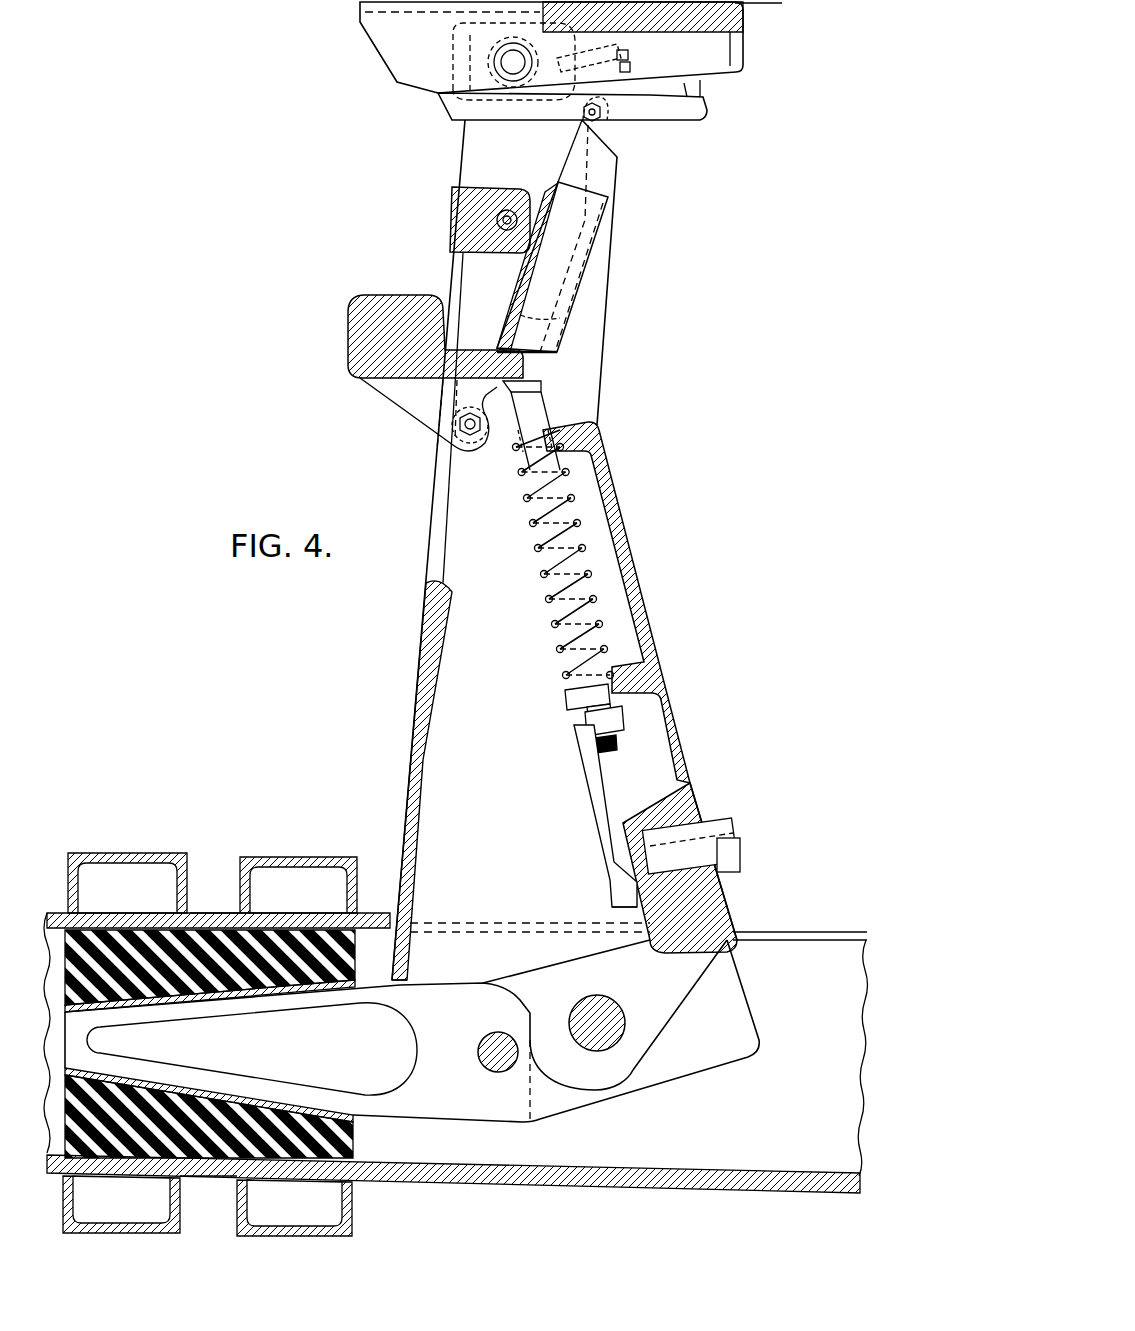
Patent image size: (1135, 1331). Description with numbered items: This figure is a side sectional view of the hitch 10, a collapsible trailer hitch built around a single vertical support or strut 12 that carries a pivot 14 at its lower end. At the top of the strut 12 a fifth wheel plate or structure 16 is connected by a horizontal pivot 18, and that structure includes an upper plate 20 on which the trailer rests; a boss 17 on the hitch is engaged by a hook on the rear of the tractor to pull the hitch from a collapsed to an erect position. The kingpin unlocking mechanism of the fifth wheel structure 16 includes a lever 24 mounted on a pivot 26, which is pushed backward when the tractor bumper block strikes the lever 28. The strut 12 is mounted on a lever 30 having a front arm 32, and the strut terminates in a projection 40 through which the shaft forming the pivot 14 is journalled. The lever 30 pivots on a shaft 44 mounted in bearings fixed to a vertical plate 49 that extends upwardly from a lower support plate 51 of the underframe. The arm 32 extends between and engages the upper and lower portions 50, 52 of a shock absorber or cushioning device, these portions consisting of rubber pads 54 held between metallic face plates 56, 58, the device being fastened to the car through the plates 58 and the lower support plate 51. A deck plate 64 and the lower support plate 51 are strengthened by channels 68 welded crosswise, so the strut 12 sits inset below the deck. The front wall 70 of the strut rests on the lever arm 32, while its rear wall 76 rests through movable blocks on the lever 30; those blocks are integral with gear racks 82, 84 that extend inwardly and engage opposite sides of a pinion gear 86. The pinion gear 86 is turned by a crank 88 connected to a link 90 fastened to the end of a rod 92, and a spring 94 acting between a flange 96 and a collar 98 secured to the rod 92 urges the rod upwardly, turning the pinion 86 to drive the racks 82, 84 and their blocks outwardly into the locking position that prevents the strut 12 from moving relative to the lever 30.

The hitch 10 is at (638, 358).
The vertical support or strut 12 is at (587, 336).
The pivot 14 is at (616, 1012).
The fifth wheel plate or structure 16 is at (354, 63).
The boss 17 is at (450, 594).
The horizontal pivot 18 is at (501, 63).
The upper plate 20 is at (362, 14).
The lever 24 is at (588, 305).
The pivot 26 is at (507, 216).
The lever 28 is at (347, 342).
The lever 30 is at (682, 1085).
The front arm 32 is at (437, 1110).
The projection 40 is at (681, 1013).
The shaft 44 is at (487, 1032).
The vertical plate 49 is at (787, 960).
The upper portion of shock absorber or cushioning device 50 is at (347, 982).
The lower support plate 51 is at (634, 1182).
The lower portion of shock absorber or cushioning device 52 is at (331, 1118).
The rubber pad 54 is at (353, 962).
The metallic face plate 56 is at (247, 990).
The metallic face plate 58 is at (217, 927).
The deck plate 64 is at (53, 912).
The channel 68 is at (138, 853).
The front wall 70 is at (411, 707).
The rear wall 76 is at (647, 610).
The gear rack 82 is at (685, 783).
The gear rack 84 is at (727, 913).
The pinion gear 86 is at (712, 838).
The crank 88 is at (632, 897).
The link 90 is at (602, 828).
The rod 92 is at (543, 560).
The spring 94 is at (531, 522).
The flange 96 is at (570, 702).
The collar 98 is at (514, 473).